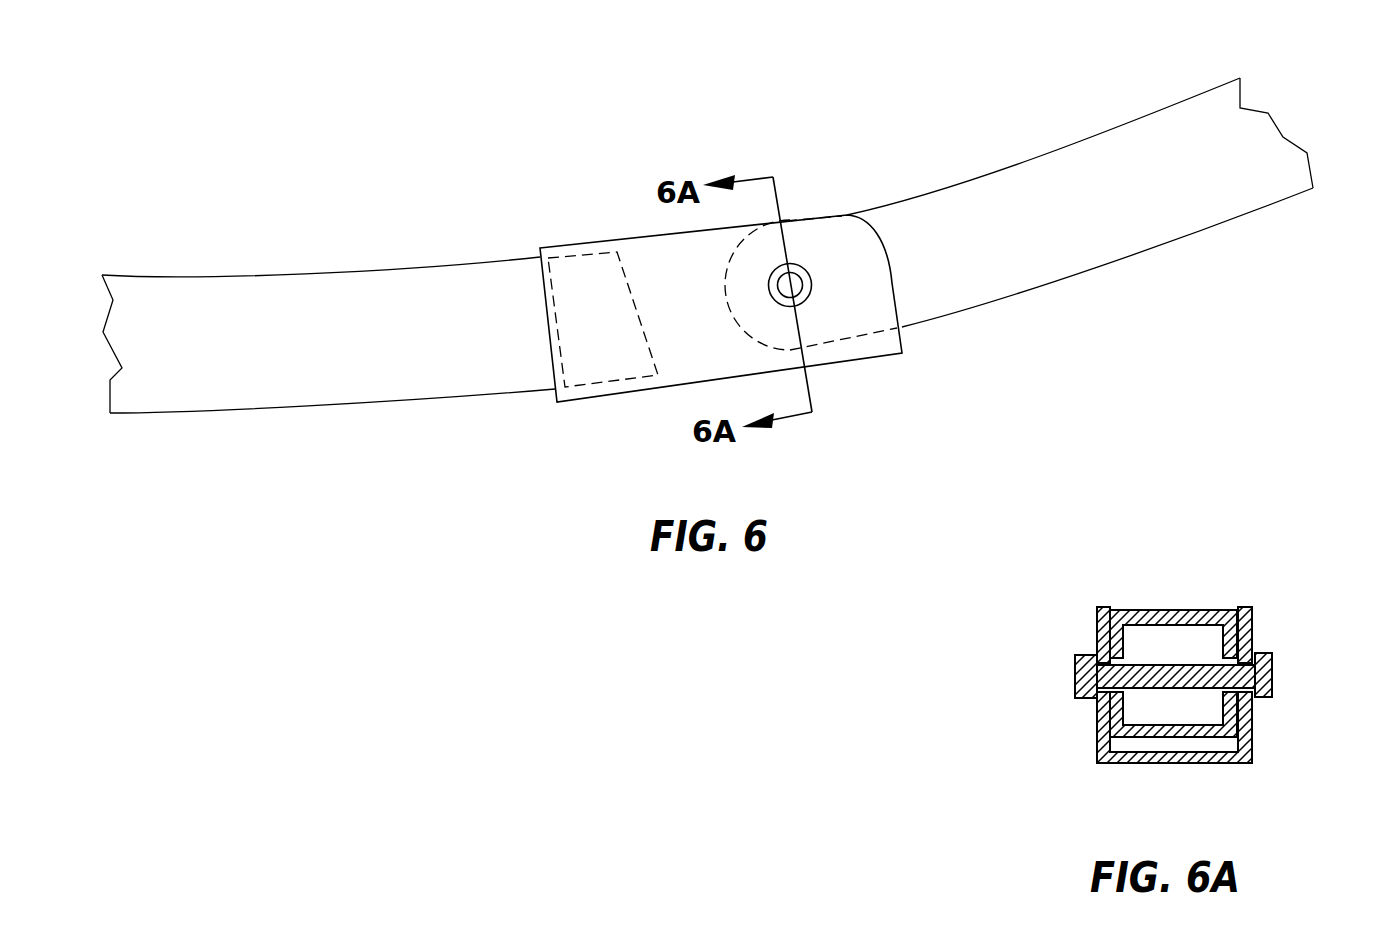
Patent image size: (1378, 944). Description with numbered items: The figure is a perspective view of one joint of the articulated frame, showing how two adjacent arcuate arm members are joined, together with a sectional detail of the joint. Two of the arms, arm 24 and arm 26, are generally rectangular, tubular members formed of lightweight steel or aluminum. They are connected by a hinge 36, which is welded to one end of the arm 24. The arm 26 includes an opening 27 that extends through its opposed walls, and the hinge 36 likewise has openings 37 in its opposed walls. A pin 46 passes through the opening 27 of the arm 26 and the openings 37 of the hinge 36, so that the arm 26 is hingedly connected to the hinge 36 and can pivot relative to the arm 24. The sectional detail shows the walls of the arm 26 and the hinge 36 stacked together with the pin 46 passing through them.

In FIG. 6, the first strap portion 24 is at (400, 313).
In FIG. 6, the second strap portion 26 is at (1052, 202).
In FIG. 6A, the second strap portion 26 is at (1185, 610).
In FIG. 6A, the grommet plate 27 is at (1270, 665).
In FIG. 6, the connector tab 36 is at (667, 270).
In FIG. 6A, the connector tab 36 is at (1157, 755).
In FIG. 6A, the plate flange 37 is at (1258, 661).
In FIG. 6, the grommet 46 is at (797, 289).
In FIG. 6A, the grommet 46 is at (1215, 677).